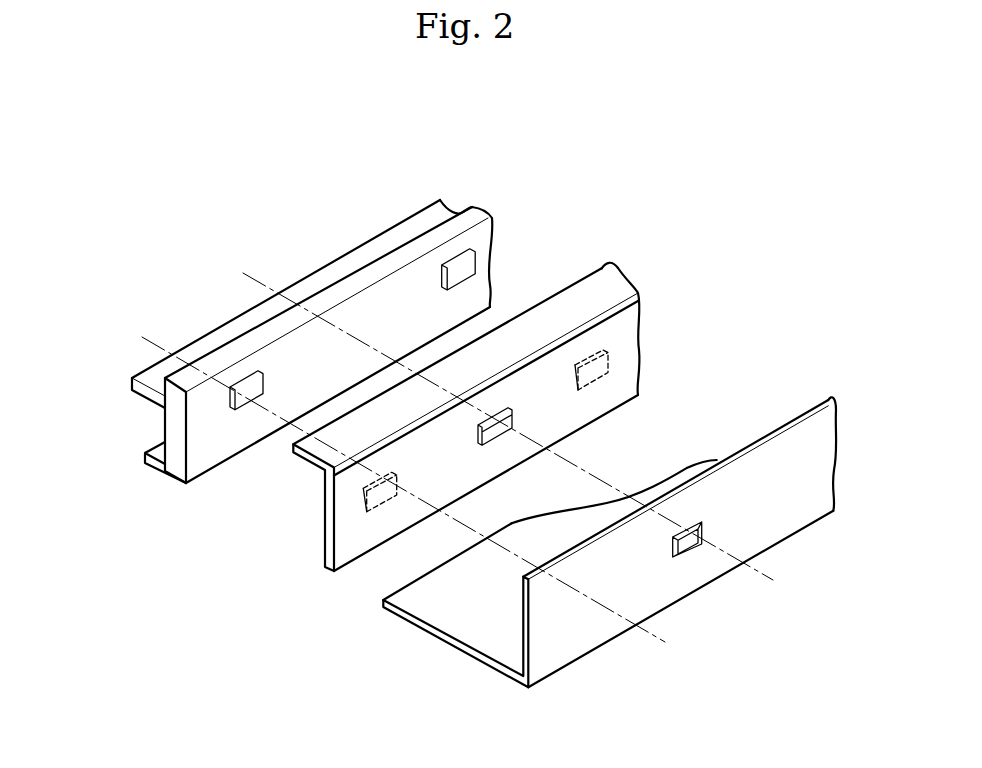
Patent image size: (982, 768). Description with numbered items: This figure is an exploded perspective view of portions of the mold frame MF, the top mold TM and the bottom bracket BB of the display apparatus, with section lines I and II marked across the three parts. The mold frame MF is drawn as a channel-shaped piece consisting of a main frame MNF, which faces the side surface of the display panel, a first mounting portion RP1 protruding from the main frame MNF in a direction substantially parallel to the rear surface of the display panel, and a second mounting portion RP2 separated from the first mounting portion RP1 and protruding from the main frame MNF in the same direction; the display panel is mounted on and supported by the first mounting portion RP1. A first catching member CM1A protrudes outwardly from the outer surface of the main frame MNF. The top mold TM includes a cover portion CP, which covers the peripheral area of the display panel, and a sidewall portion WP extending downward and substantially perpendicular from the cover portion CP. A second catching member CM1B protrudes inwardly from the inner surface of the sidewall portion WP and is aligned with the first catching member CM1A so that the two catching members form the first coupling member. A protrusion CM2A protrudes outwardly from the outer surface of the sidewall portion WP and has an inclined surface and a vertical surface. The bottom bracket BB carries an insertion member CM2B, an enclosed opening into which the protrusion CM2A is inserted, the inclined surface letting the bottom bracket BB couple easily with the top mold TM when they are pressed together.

The mold frame MF is at (474, 201).
The first mounting portion RP1 is at (150, 392).
The main frame MNF is at (178, 428).
The second mounting portion RP2 is at (150, 463).
The first catching member CM1A is at (458, 268).
The top mold TM is at (612, 268).
The cover portion CP is at (565, 300).
The sidewall portion WP is at (626, 341).
The second catching member CM1B is at (598, 368).
The protrusion CM2A is at (509, 420).
The bottom bracket BB is at (828, 396).
The insertion member CM2B is at (685, 540).
The section line I-I' I is at (666, 642).
The section line II-II' II is at (774, 580).